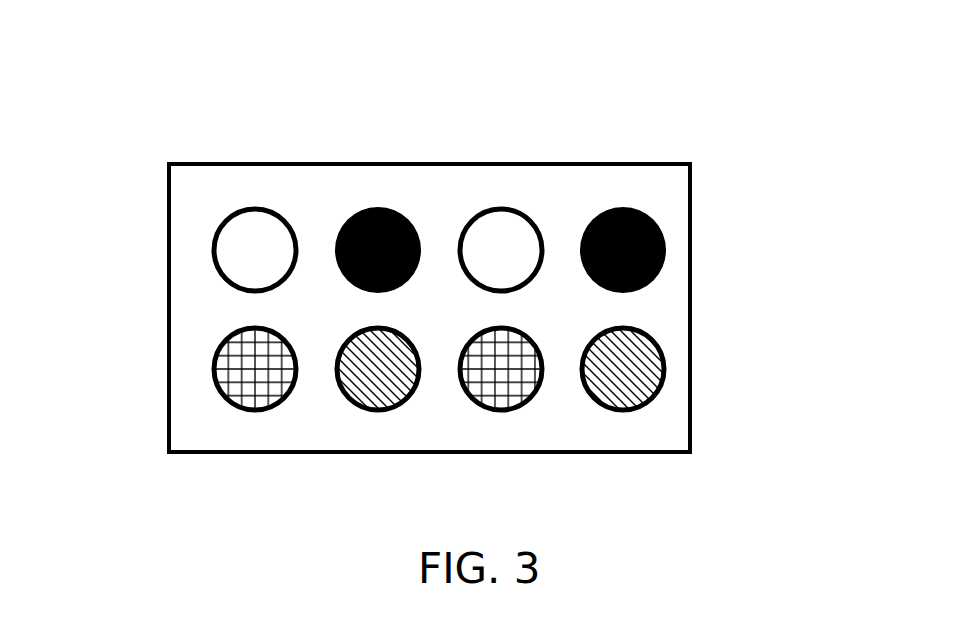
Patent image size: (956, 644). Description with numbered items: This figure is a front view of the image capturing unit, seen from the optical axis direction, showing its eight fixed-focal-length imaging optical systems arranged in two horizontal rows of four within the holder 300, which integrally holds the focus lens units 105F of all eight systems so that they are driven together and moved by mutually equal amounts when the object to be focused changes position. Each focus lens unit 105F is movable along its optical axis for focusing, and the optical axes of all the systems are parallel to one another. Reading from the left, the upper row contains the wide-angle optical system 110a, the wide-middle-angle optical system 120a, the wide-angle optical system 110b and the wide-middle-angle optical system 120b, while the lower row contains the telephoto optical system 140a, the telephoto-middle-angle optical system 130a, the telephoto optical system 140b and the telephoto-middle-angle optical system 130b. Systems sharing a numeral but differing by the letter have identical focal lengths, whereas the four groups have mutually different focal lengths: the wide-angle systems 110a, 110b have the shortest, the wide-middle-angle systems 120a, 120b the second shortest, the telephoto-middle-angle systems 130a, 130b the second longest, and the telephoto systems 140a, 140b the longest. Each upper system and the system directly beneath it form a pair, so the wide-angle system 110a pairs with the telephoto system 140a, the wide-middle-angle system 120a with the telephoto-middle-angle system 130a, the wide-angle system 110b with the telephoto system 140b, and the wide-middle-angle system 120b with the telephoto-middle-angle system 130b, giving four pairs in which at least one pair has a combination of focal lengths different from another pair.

The holder 300 is at (445, 164).
The focus lens unit 105F is at (252, 370).
The wide-angle optical system 110a is at (257, 207).
The wide-middle-angle optical system 120a is at (380, 207).
The wide-angle optical system 110b is at (501, 207).
The wide-middle-angle optical system 120b is at (627, 209).
The telephoto optical system 140a is at (214, 366).
The telephoto-middle-angle optical system 130a is at (378, 412).
The telephoto optical system 140b is at (501, 412).
The telephoto-middle-angle optical system 130b is at (660, 347).